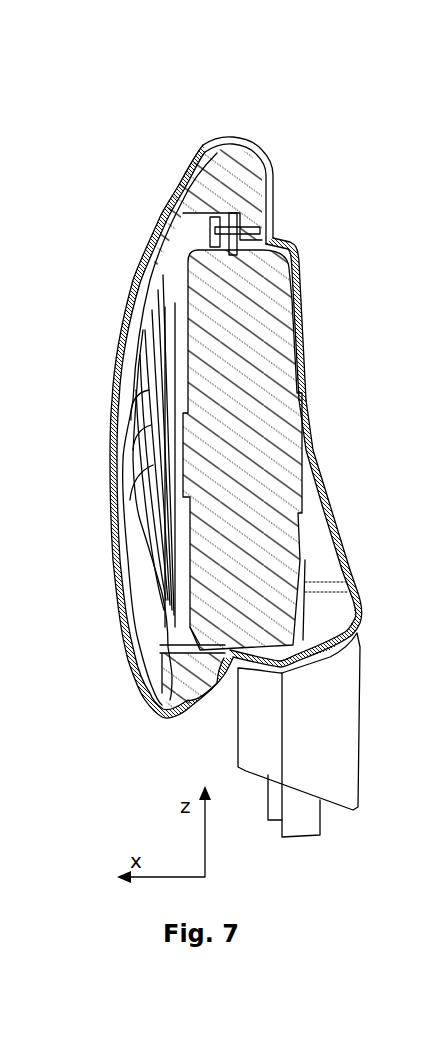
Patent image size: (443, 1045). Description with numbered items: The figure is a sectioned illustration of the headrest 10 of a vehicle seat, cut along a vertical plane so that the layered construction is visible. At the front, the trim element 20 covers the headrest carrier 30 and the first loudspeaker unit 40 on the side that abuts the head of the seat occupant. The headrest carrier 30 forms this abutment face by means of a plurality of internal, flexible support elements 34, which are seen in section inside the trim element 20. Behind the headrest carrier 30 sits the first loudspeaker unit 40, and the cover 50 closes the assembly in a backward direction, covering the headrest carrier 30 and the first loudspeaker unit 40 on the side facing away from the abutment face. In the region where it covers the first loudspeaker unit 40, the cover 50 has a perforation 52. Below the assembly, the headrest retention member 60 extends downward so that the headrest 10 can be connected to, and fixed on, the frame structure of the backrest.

The headrest 10 is at (153, 108).
The trim element 20 is at (130, 640).
The headrest carrier 30 is at (238, 172).
The support elements 34 is at (170, 388).
The first loudspeaker unit 40 is at (222, 475).
The cover 50 is at (302, 262).
The perforation 52 is at (310, 450).
The headrest retention member 60 is at (303, 813).